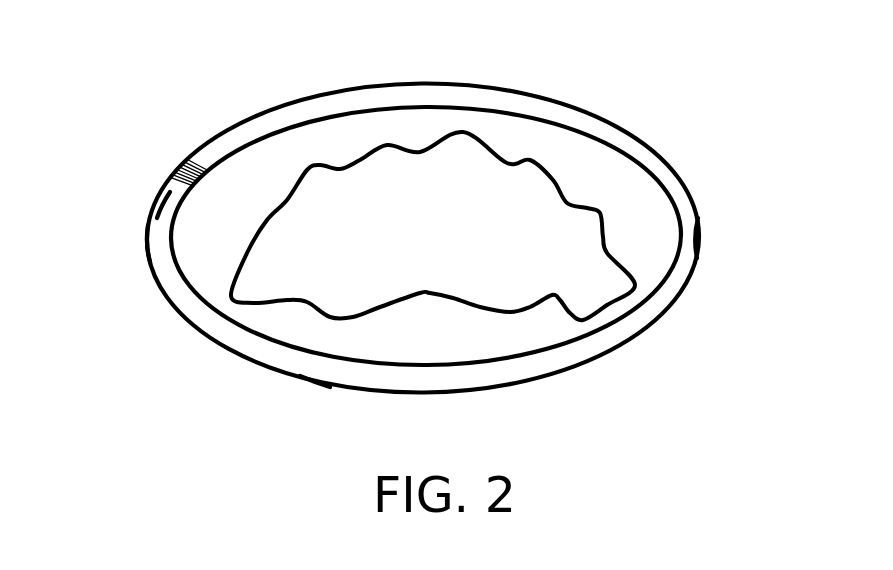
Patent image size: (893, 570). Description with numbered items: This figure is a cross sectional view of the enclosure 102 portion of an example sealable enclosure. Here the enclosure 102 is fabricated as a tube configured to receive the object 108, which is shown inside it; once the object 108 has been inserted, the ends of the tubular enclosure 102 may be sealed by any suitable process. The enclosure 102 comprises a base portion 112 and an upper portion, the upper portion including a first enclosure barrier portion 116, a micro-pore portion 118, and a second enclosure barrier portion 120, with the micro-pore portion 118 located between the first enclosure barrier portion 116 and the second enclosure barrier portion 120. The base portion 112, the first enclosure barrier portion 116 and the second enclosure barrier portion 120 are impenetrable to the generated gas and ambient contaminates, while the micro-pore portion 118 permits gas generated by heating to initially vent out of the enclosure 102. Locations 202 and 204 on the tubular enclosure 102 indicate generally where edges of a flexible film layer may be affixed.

The enclosure 102 is at (641, 79).
The object 108 is at (449, 240).
The base portion 112 is at (302, 378).
The first enclosure barrier portion 116 is at (348, 86).
The micro-pore portion 118 is at (182, 164).
The second enclosure barrier portion 120 is at (157, 200).
The location 202 is at (128, 244).
The location 204 is at (716, 207).